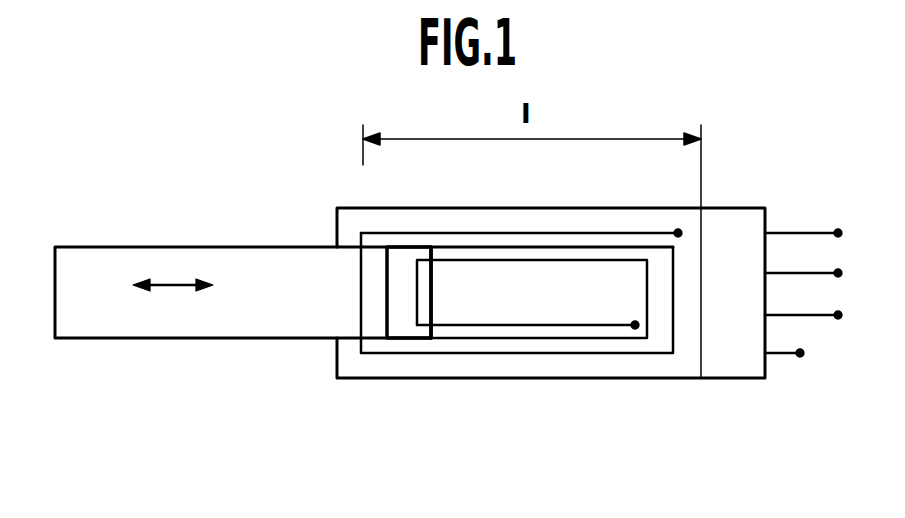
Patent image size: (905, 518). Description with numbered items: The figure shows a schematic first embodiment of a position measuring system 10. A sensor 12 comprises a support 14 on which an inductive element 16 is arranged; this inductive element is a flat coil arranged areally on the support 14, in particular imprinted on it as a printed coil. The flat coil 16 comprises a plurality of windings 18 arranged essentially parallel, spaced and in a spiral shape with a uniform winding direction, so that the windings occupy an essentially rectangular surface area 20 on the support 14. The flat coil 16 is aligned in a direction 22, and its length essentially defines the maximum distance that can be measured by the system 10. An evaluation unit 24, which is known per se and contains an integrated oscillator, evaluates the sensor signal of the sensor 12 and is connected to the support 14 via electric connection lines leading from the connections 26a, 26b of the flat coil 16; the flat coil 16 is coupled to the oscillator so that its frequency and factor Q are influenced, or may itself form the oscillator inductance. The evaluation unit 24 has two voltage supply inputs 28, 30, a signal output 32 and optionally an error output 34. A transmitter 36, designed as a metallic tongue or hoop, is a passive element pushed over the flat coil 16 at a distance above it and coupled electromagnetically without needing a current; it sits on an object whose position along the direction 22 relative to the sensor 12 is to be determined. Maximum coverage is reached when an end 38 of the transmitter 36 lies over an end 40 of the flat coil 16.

The position measuring system 10 is at (720, 393).
The sensor 12 is at (468, 378).
The support 14 is at (353, 378).
The inductive element 16 is at (657, 353).
The windings 18 is at (425, 353).
The surface area 20 is at (500, 258).
The direction 22 is at (170, 283).
The evaluation unit 24 is at (712, 350).
The connection 26a is at (677, 231).
The connection 26b is at (634, 327).
The voltage supply input 28 is at (813, 232).
The voltage supply input 30 is at (835, 316).
The signal output 32 is at (783, 272).
The error output 34 is at (790, 357).
The transmitter 36 is at (207, 258).
The end of the transmitter 38 is at (431, 300).
The end of the flat coil 40 is at (677, 297).